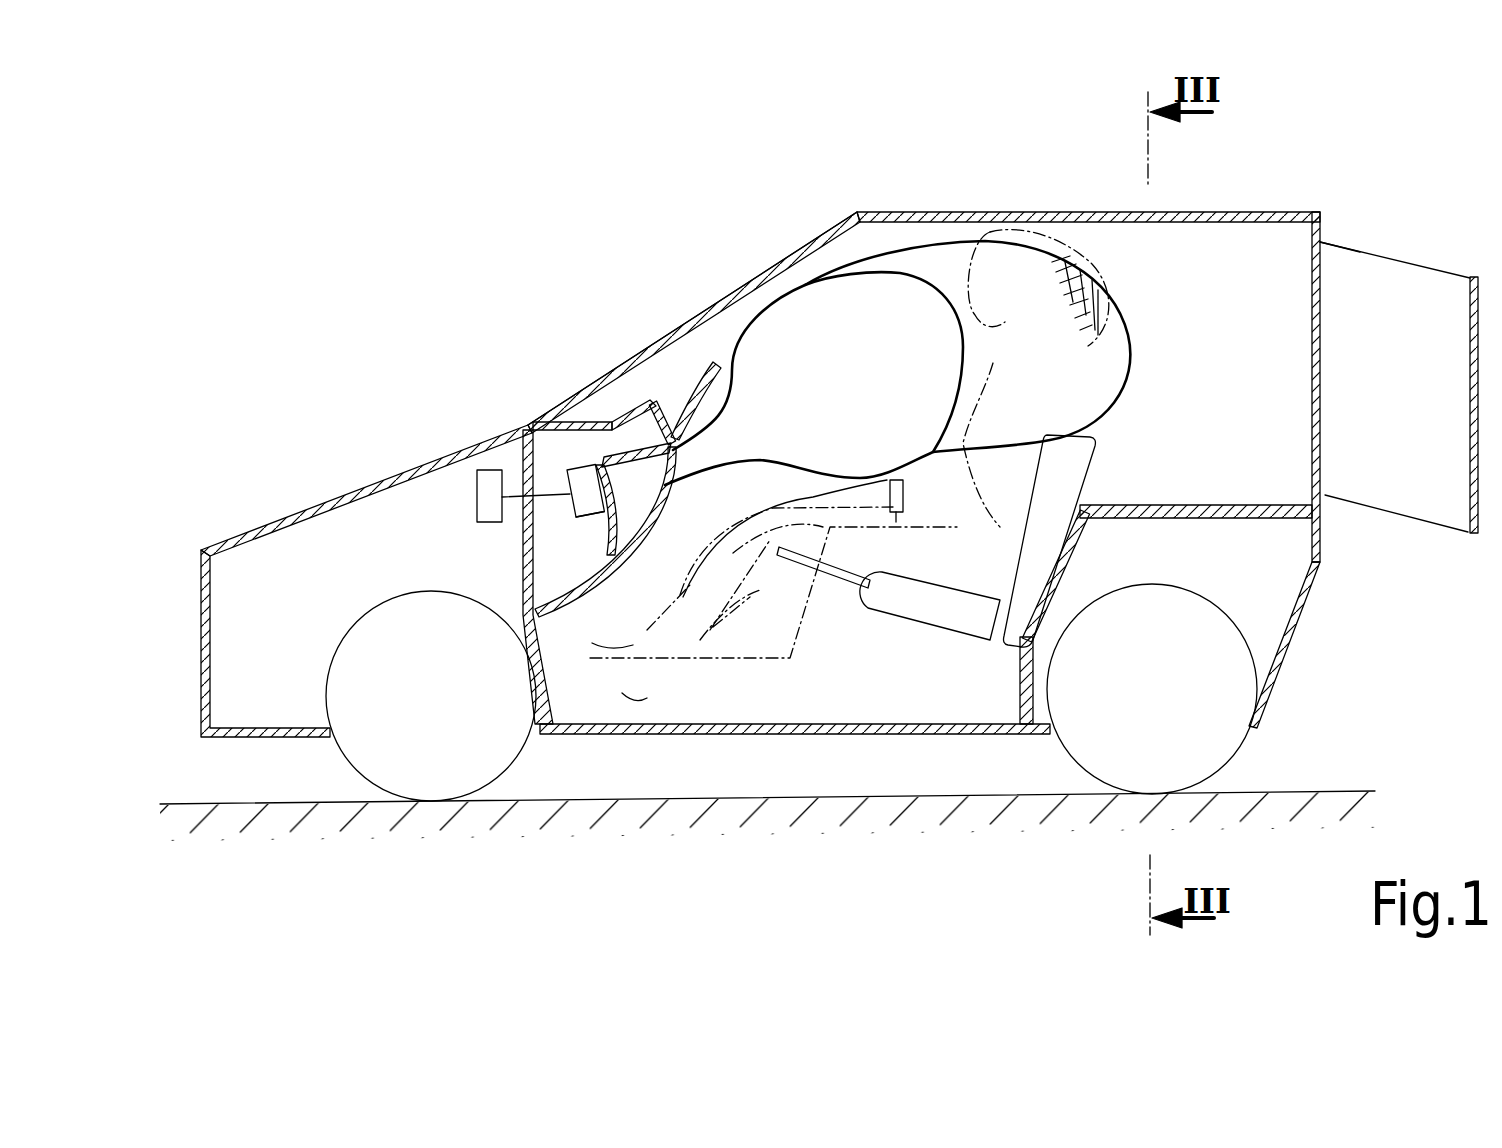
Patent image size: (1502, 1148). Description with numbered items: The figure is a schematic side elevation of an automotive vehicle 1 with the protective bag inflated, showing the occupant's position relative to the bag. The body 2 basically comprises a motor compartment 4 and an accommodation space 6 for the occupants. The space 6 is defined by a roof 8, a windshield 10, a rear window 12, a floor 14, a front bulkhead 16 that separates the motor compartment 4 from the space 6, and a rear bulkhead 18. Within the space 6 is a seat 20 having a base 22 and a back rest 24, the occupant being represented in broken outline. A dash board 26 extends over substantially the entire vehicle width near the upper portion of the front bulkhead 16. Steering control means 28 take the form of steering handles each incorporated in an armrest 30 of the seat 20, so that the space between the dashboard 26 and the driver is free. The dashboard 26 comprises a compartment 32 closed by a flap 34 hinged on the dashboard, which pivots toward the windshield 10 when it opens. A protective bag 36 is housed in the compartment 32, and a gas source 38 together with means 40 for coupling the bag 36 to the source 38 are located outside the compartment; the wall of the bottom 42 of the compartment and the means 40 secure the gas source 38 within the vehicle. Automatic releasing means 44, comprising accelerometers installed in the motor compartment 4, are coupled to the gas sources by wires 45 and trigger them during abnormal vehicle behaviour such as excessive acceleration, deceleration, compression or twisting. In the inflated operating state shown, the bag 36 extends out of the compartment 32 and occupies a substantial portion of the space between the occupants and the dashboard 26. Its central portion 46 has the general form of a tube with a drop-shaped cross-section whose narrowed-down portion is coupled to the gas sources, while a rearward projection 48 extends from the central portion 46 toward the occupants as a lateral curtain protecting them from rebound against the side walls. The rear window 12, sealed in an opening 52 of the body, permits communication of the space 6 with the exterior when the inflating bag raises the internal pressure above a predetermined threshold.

The automotive vehicle 1 is at (692, 216).
The body 2 is at (623, 359).
The motor compartment 4 is at (267, 573).
The accommodation space 6 is at (1223, 260).
The roof 8 is at (1013, 212).
The windshield 10 is at (810, 240).
The rear window 12 is at (1467, 433).
The floor 14 is at (870, 735).
The front bulkhead 16 is at (517, 473).
The rear bulkhead 18 is at (1045, 560).
The seat 20 is at (945, 640).
The base 22 is at (905, 596).
The back rest 24 is at (1070, 465).
The dash board 26 is at (658, 398).
The steering control means 28 is at (735, 580).
The armrest 30 is at (992, 540).
The compartment 32 is at (623, 502).
The flap 34 is at (682, 450).
The protective bag 36 is at (867, 252).
The gas source 38 is at (585, 466).
The coupling means 40 is at (590, 512).
The bottom 42 is at (612, 470).
The automatic releasing means 44 is at (483, 497).
The wires 45 is at (562, 498).
The central portion 46 is at (907, 317).
The rearward projection 48 is at (1078, 250).
The opening 52 is at (1320, 260).